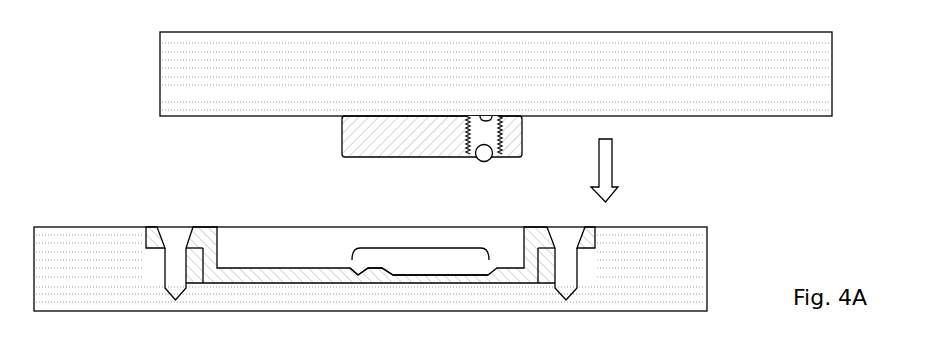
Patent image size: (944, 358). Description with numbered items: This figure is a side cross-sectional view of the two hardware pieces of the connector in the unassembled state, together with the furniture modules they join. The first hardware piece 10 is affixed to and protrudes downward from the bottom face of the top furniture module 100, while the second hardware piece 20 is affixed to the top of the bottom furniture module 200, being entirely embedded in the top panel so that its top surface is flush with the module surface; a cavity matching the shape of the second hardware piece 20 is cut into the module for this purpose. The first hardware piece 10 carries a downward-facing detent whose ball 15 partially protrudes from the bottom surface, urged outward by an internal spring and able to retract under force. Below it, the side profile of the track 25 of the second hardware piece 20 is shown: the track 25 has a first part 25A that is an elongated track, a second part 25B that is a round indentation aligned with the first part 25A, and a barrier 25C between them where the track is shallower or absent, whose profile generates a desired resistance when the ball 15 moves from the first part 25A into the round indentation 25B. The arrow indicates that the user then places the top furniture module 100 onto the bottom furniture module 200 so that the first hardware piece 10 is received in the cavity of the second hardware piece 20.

The top furniture module 100 is at (181, 87).
The first hardware piece 10 is at (352, 140).
The ball 15 is at (490, 160).
The bottom furniture module 200 is at (682, 262).
The second hardware piece 20 is at (287, 276).
The track 25 is at (426, 247).
The first part of the track 25A is at (445, 277).
The second part of the track 25B is at (360, 276).
The barrier 25C is at (380, 270).